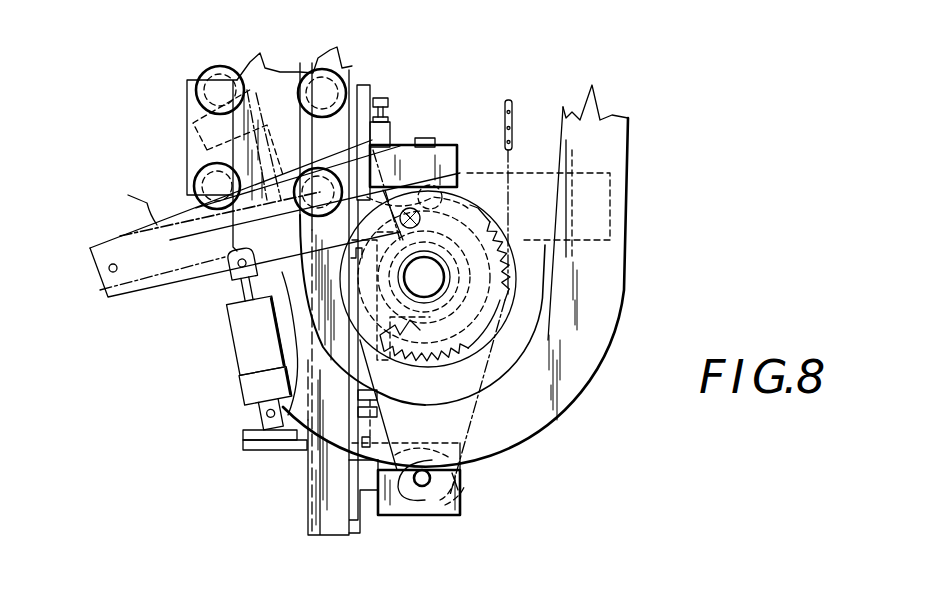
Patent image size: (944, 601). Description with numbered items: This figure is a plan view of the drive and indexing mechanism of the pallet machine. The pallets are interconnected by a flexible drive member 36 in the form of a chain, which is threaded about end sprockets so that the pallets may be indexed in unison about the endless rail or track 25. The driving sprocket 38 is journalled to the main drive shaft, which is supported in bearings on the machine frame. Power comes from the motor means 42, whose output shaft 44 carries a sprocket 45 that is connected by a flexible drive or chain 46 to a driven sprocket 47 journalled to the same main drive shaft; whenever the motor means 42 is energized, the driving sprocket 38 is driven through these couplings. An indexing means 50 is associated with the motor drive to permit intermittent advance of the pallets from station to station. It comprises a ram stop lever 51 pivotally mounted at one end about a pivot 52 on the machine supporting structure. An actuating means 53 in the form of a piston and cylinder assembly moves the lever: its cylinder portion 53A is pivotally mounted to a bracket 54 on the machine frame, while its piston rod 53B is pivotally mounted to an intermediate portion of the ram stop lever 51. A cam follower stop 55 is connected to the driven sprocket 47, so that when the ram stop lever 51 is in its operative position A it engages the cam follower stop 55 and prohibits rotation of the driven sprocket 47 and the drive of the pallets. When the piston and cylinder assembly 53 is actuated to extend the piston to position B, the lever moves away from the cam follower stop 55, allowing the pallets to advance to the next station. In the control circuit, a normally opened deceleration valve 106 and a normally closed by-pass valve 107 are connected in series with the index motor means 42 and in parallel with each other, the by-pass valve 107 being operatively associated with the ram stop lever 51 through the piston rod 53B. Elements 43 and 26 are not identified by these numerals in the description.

The normally closed by-pass valve 107 is at (280, 97).
The indexing means 50 is at (163, 168).
The position B is at (134, 199).
The ram stop lever 51 is at (157, 290).
The pivot 52 is at (108, 268).
The piston rod 53B is at (223, 293).
The actuating means 53 is at (215, 348).
The cylinder portion 53A is at (253, 383).
The bracket 54 is at (243, 432).
The vertical column 43 is at (353, 523).
The normally opened deceleration valve 106 is at (443, 147).
The flexible drive member 36 is at (505, 100).
The housing wall 26 is at (537, 183).
The endless rail or track 25 is at (617, 157).
The cam follower stop 55 is at (464, 198).
The driven sprocket 47 is at (483, 320).
The driving sprocket 38 is at (492, 263).
The flexible drive or chain 46 is at (473, 382).
The motor means 42 is at (395, 505).
The output shaft 44 is at (426, 487).
The sprocket 45 is at (450, 473).
The position A is at (361, 269).